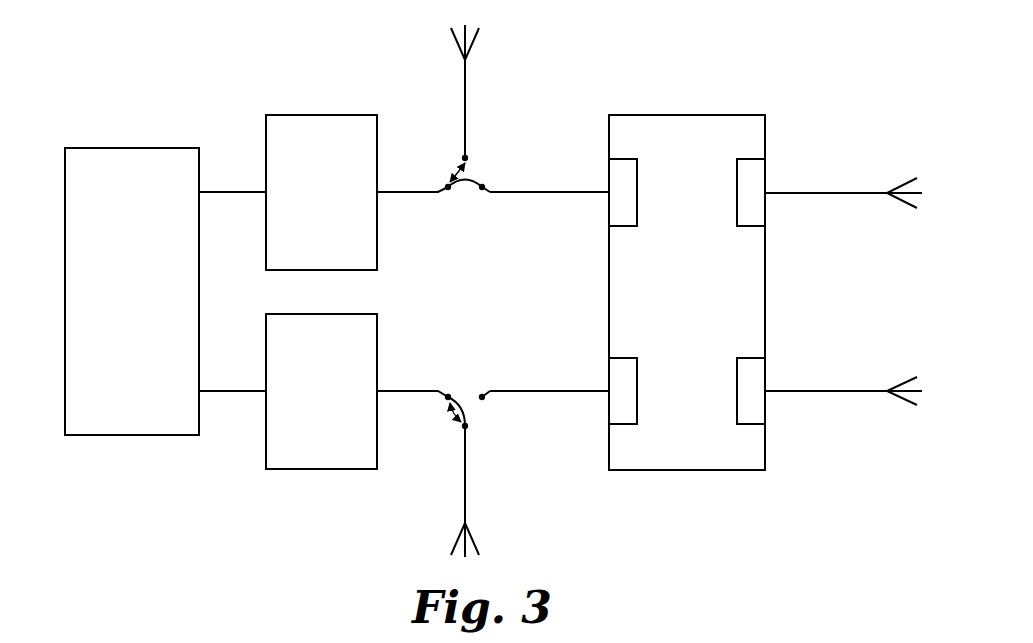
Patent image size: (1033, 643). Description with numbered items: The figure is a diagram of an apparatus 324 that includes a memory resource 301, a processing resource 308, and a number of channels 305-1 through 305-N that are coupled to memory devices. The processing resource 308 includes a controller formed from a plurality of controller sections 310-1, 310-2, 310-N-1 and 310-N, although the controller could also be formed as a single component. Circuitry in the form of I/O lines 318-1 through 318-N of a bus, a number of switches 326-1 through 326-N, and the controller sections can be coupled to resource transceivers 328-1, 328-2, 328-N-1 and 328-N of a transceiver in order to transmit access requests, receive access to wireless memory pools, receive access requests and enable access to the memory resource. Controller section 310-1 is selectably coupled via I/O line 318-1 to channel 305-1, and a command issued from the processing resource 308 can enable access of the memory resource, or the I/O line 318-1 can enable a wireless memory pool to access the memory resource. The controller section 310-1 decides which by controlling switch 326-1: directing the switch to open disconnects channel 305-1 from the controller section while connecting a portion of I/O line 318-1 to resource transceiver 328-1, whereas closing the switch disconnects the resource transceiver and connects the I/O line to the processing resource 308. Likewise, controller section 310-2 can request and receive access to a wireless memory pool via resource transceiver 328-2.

The apparatus 324 is at (101, 51).
The memory resource 301 is at (127, 155).
The channel 305-1 is at (288, 192).
The channel 305-N is at (288, 391).
The switch 326-1 is at (446, 180).
The switch 326-N is at (452, 414).
The I/O line 318-1 is at (560, 194).
The I/O line 318-N is at (561, 389).
The resource transceiver 328-1 is at (468, 72).
The resource transceiver 328-2 is at (870, 196).
The resource transceiver 328-N is at (870, 388).
The resource transceiver 328-N-1 is at (468, 512).
The processing resource 308 is at (708, 120).
The controller section 310-1 is at (622, 177).
The controller section 310-2 is at (752, 177).
The controller section 310-N-1 is at (622, 408).
The controller section 310-N is at (752, 408).